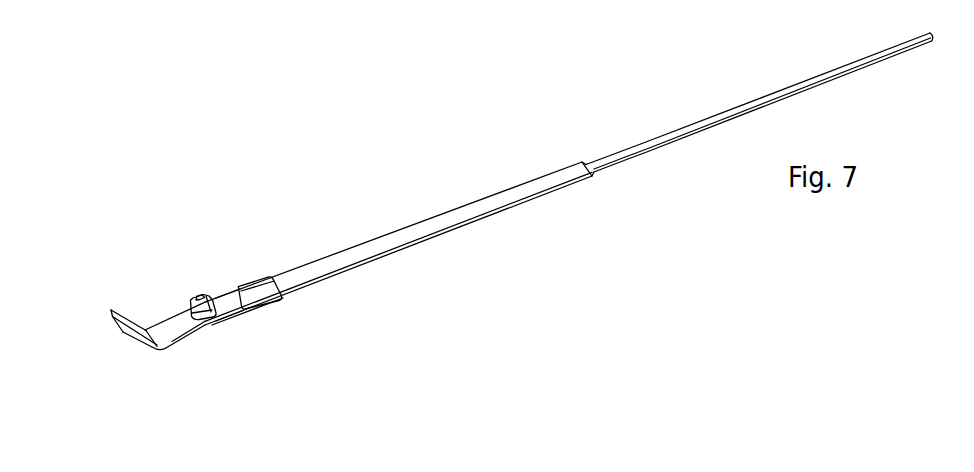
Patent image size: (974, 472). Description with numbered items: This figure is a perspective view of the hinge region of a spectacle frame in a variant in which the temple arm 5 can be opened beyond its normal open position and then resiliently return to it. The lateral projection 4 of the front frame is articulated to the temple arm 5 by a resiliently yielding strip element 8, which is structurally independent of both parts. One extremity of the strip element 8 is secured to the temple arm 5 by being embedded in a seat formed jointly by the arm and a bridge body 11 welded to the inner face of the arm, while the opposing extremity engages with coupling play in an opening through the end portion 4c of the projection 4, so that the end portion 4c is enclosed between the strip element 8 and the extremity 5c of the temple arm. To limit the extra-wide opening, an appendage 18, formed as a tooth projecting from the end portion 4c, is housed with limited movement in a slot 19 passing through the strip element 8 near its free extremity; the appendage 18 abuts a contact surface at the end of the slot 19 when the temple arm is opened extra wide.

The lateral projection 4 is at (145, 347).
The end portion of the projection 4c is at (222, 326).
The temple arm 5 is at (408, 233).
The extremity of the temple arm 5c is at (190, 339).
The resiliently yielding strip element 8 is at (228, 300).
The bridge body 11 is at (263, 282).
The appendage 18 is at (190, 299).
The slot 19 is at (205, 294).